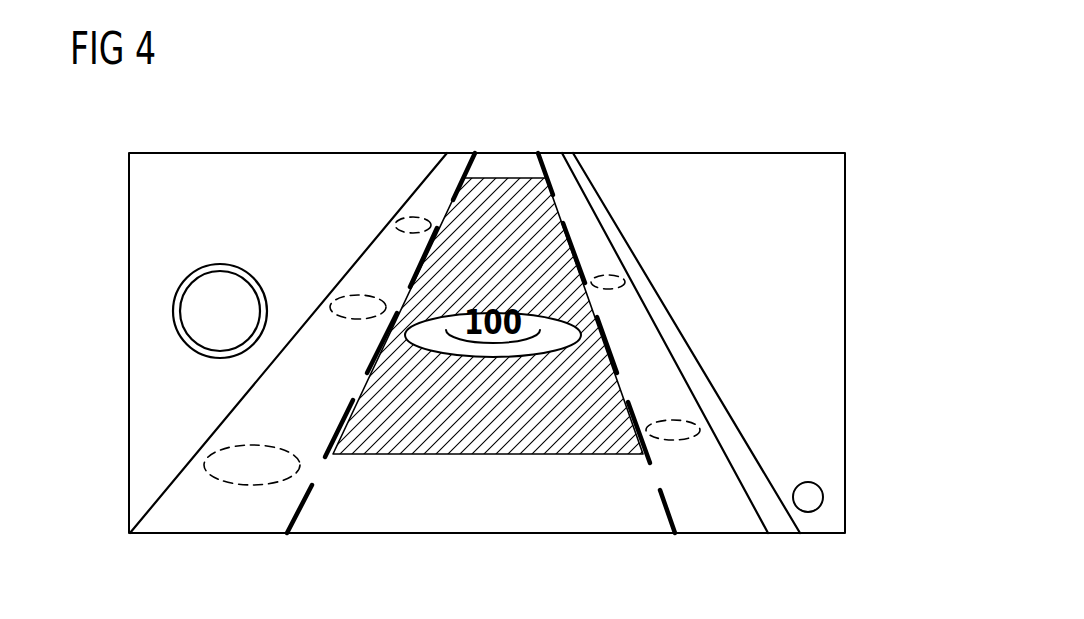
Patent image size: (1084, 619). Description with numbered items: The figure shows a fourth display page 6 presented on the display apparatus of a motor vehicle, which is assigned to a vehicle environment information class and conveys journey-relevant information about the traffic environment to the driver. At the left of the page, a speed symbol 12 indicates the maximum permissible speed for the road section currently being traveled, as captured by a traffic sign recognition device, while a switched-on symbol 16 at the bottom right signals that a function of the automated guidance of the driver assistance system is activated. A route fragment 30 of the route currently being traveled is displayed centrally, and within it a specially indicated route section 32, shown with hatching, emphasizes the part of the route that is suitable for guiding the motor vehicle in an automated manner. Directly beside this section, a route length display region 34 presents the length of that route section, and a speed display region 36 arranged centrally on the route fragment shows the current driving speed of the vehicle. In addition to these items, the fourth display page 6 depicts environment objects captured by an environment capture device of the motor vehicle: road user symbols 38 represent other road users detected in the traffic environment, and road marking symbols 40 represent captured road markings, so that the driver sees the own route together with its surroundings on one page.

The fourth display page 6 is at (862, 118).
The speed symbol 12 is at (189, 314).
The switched-on symbol 16 is at (808, 504).
The route fragment 30 is at (566, 202).
The route section 32 is at (462, 418).
The route length display region 34 is at (785, 295).
The speed display region 36 is at (479, 275).
The road user symbols 38 is at (215, 466).
The road marking symbols 40 is at (352, 404).